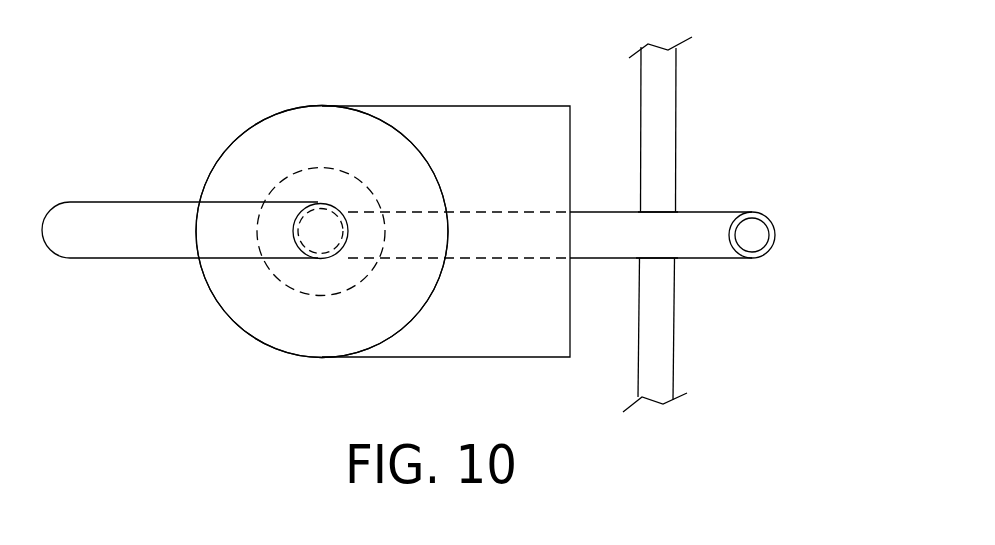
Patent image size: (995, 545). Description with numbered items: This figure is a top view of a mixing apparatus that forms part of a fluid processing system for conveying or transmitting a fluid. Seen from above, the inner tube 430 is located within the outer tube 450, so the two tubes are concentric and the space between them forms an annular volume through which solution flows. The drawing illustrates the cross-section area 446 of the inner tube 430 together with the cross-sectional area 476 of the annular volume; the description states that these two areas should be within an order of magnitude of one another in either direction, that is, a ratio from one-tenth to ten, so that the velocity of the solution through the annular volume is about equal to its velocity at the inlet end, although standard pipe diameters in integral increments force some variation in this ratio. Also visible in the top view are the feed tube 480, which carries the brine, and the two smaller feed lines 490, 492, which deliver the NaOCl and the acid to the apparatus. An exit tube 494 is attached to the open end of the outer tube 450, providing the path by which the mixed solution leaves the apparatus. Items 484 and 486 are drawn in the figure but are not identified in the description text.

The inner tube 430 is at (367, 192).
The cross-section area of the inner tube 446 is at (342, 290).
The outer tube 450 is at (263, 117).
The cross-sectional area of the annular volume 476 is at (342, 343).
The feed tube 480 is at (772, 225).
The lower junction 484 is at (638, 258).
The upper junction 486 is at (677, 208).
The feed line 490 is at (673, 297).
The feed line 492 is at (677, 117).
The exit tube 494 is at (103, 201).